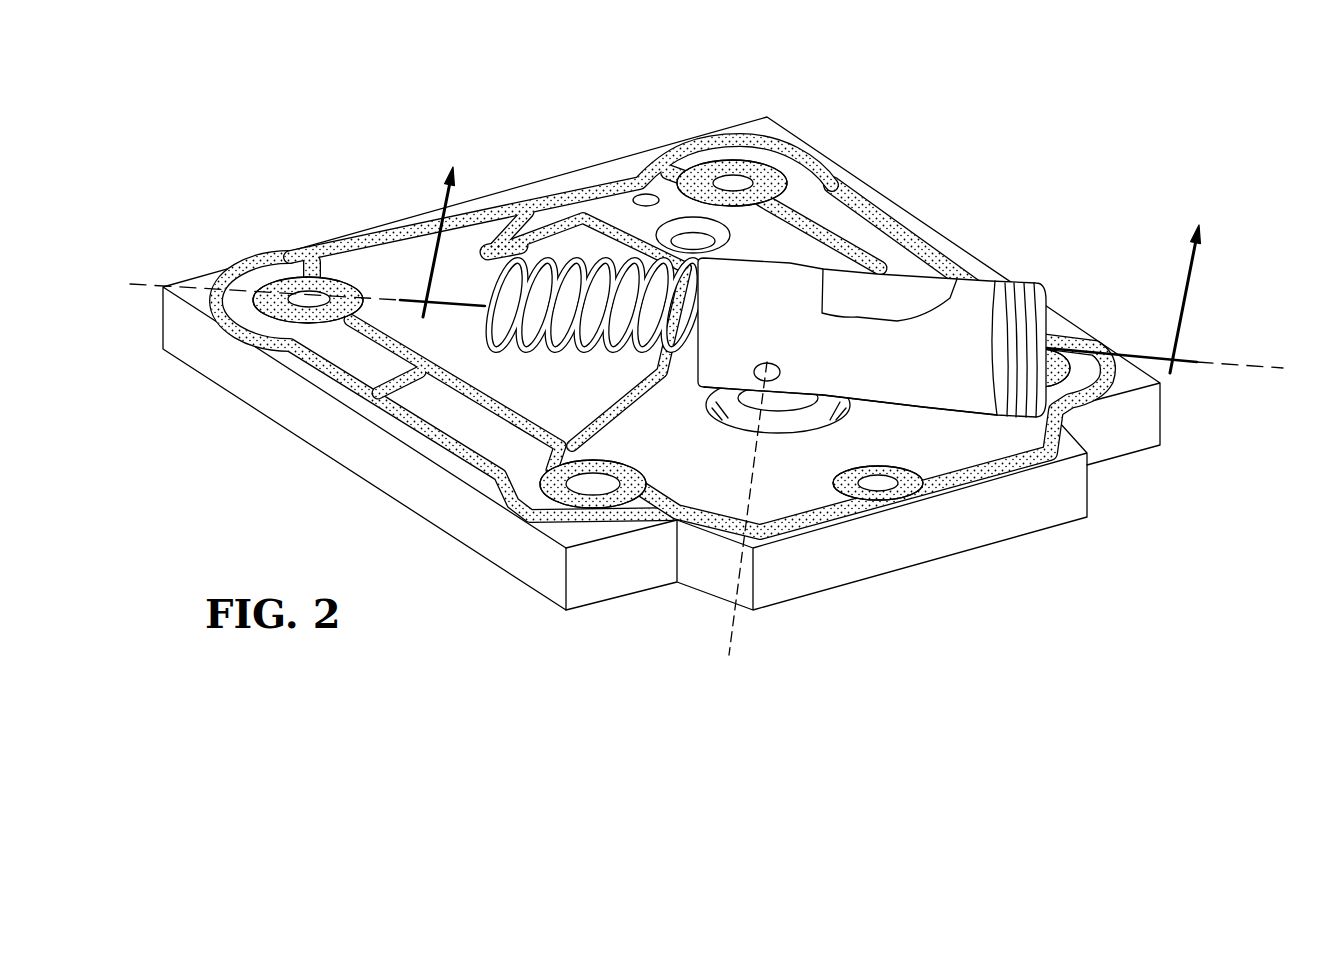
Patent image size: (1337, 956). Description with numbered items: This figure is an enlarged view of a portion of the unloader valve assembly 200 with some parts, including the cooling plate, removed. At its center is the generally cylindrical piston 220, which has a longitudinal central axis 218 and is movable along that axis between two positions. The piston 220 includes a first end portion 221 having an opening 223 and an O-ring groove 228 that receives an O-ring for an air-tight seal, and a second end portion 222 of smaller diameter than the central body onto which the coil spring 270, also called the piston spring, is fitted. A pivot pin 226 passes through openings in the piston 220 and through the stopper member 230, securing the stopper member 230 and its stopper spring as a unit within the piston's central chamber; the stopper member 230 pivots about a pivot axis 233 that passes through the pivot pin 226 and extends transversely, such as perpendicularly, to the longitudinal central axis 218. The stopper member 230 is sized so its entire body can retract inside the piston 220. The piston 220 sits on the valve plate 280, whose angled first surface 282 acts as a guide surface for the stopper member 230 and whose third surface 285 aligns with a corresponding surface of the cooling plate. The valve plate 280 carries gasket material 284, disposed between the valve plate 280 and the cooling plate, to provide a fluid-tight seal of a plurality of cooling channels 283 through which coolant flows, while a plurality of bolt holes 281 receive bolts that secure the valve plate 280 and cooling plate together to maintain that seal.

The unloader valve assembly 200 is at (1020, 120).
The longitudinal central axis 218 is at (383, 298).
The piston 220 is at (990, 290).
The first end portion 221 is at (1065, 418).
The second end portion 222 is at (590, 330).
The opening 223 is at (1047, 350).
The pivot pin 226 is at (767, 360).
The O-ring groove 228 is at (1018, 400).
The stopper member 230 is at (803, 430).
The pivot axis 233 is at (735, 645).
The coil spring 270 is at (607, 257).
The valve plate 280 is at (887, 548).
The bolt holes 281 is at (240, 340).
The first surface 282 is at (717, 430).
The cooling channels 283 is at (778, 168).
The gasket material 284 is at (310, 257).
The third surface 285 is at (822, 430).